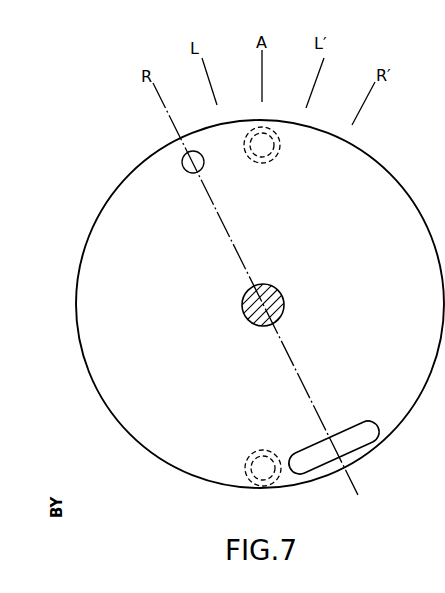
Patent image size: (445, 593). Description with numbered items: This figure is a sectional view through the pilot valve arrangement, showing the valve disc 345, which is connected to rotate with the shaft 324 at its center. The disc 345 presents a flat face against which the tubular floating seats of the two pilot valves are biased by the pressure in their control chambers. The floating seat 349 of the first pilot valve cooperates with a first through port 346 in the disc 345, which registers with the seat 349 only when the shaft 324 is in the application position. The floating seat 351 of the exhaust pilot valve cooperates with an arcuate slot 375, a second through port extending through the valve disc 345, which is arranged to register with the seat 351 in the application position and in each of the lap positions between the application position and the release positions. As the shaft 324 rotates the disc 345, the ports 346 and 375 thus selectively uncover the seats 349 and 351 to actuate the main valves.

The valve disc 345 is at (88, 320).
The first through port 346 is at (184, 154).
The tubular floating seat of the first pilot valve 349 is at (273, 157).
The shaft 324 is at (285, 302).
The arcuate slot 375 is at (343, 430).
The floating seat of the exhaust pilot valve 351 is at (262, 450).